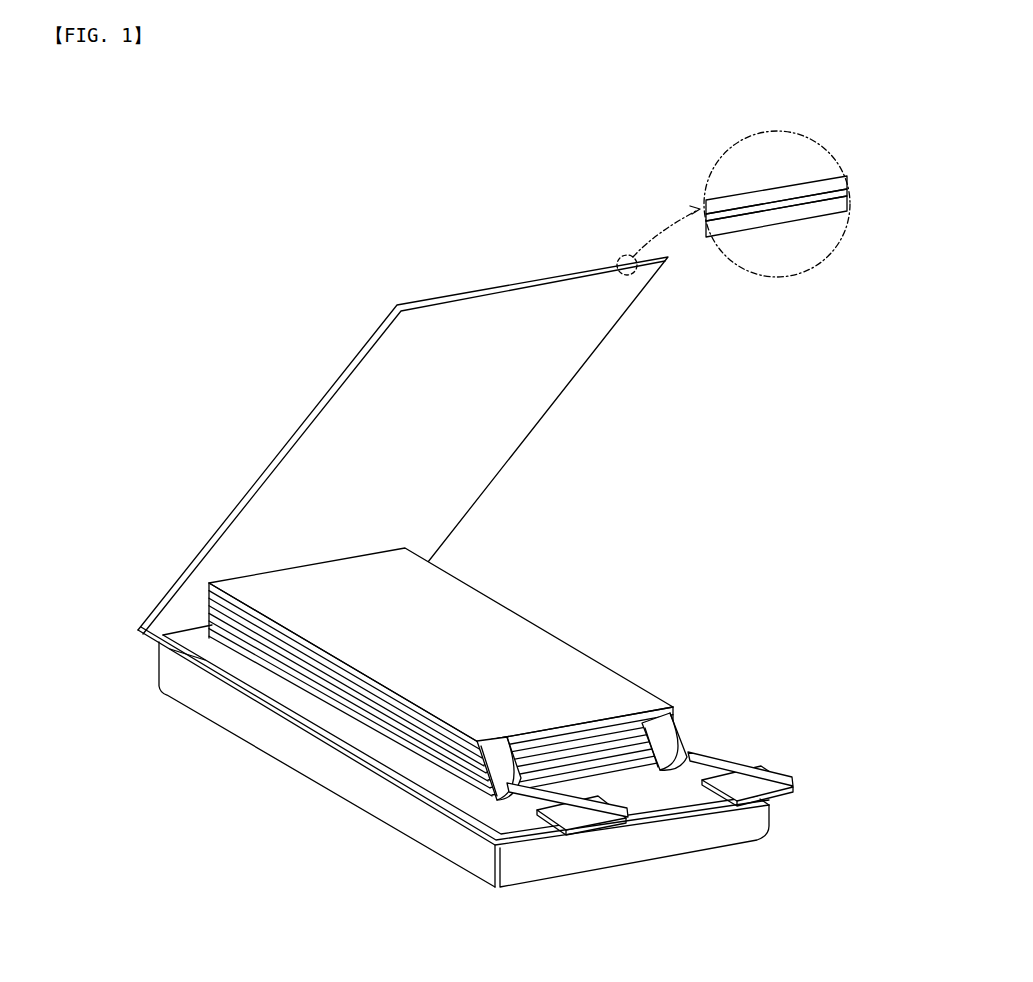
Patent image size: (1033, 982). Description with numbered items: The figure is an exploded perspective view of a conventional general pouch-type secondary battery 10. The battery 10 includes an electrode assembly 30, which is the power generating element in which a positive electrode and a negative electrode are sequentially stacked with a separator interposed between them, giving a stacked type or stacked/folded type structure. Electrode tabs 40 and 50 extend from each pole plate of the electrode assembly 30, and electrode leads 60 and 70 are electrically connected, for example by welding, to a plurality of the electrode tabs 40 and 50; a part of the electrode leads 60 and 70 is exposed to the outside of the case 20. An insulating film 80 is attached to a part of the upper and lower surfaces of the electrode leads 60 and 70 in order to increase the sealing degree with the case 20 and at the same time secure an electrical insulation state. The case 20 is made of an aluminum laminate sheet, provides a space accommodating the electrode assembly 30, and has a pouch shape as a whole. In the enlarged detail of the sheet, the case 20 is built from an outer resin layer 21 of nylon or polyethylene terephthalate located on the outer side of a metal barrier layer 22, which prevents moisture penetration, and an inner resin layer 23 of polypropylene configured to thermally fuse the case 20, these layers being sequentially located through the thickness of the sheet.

The pouch-type secondary battery 10 is at (145, 370).
The case 20 is at (138, 630).
The outer resin layer 21 is at (840, 177).
The metal barrier layer 22 is at (848, 191).
The inner resin layer 23 is at (848, 211).
The electrode assembly 30 is at (522, 605).
The electrode tab 40 is at (497, 766).
The electrode tab 50 is at (673, 738).
The electrode lead 60 is at (493, 818).
The electrode lead 70 is at (730, 750).
The insulating film 80 is at (533, 827).